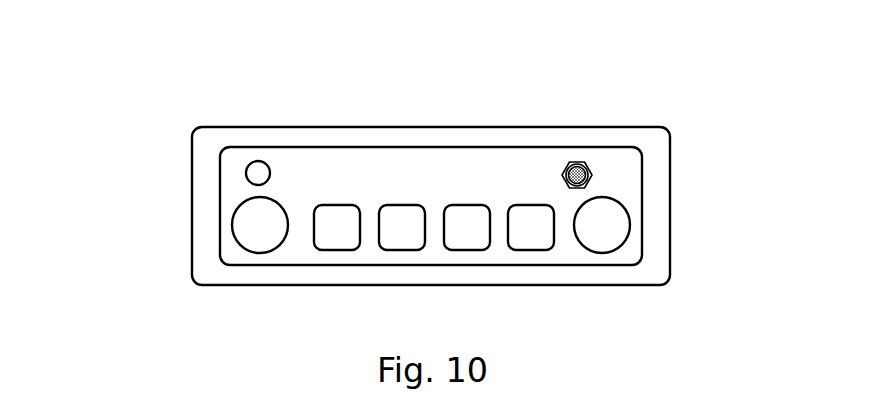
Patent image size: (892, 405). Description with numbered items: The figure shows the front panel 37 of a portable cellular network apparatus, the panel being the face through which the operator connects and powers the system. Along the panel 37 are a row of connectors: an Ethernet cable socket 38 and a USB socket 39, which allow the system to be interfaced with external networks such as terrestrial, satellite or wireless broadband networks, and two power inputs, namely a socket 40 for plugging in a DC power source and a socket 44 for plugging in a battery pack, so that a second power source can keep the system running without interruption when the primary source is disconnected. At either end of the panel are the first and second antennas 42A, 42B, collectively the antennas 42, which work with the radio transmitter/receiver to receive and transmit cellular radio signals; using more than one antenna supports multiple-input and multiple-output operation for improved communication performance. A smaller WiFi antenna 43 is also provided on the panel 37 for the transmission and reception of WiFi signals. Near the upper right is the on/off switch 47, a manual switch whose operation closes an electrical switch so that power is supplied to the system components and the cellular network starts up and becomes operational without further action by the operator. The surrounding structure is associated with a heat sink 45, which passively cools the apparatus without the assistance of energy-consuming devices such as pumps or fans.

The front panel 37 is at (190, 221).
The Ethernet cable socket 38 is at (337, 205).
The USB socket 39 is at (403, 205).
The socket for DC power source 40 is at (465, 205).
The antennas 42 is at (427, 174).
The first antenna 42A is at (236, 210).
The second antenna 42B is at (630, 227).
The WiFi antenna 43 is at (252, 162).
The socket for battery pack 44 is at (528, 205).
The heat sink 45 is at (410, 127).
The on/off switch 47 is at (588, 163).